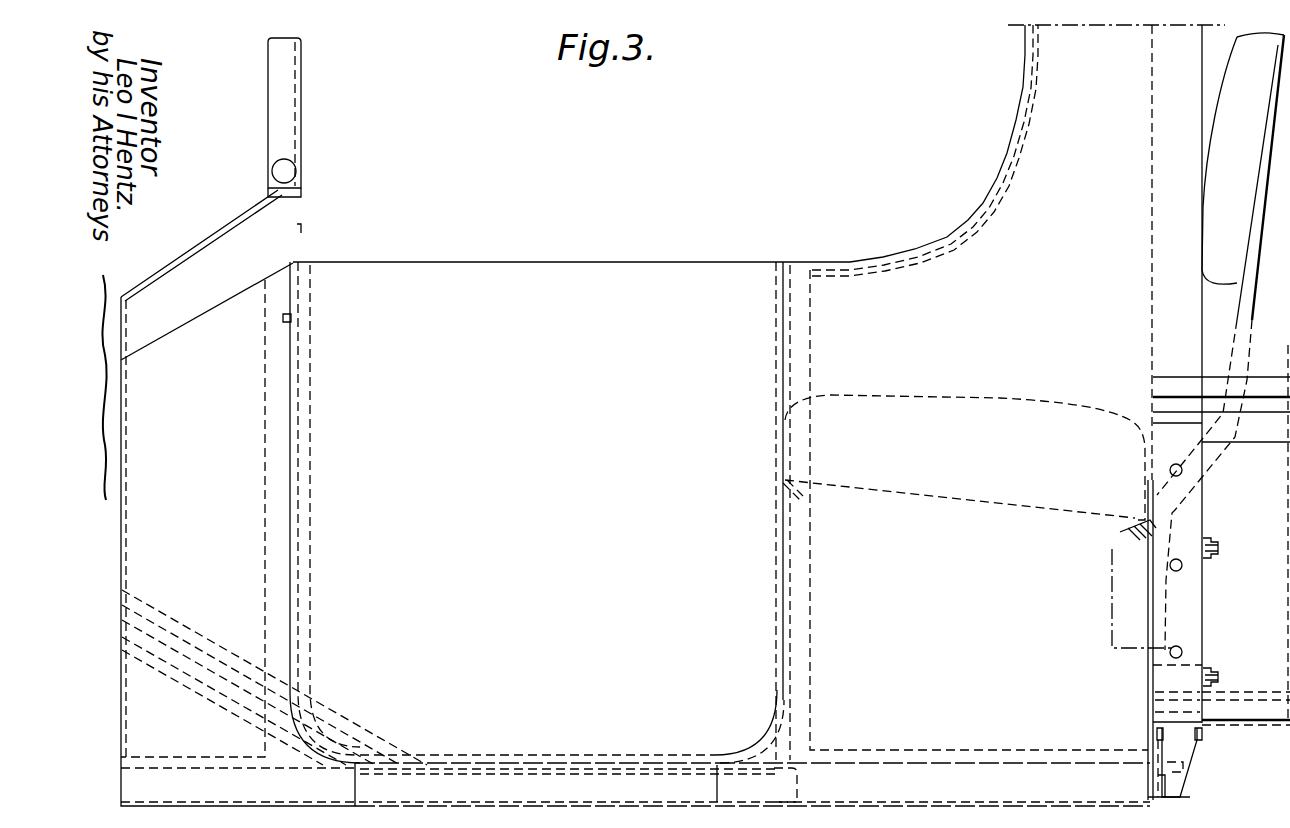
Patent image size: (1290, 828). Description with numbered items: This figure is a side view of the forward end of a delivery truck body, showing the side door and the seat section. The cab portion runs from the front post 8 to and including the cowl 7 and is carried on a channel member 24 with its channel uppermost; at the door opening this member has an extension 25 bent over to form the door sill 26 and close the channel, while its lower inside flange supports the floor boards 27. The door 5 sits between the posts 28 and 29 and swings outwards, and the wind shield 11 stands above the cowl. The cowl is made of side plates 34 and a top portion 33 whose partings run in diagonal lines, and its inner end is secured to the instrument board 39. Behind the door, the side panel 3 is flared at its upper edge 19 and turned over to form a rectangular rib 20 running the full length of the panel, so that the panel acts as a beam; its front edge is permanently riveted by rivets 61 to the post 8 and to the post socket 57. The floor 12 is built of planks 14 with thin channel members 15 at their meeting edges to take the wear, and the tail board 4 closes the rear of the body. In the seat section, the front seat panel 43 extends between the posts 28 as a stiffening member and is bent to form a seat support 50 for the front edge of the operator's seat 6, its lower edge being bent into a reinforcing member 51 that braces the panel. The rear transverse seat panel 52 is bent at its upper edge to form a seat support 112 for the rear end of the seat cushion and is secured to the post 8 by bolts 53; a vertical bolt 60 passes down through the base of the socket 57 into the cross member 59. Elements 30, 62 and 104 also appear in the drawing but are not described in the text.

The side panel 3 is at (1260, 490).
The tail board 4 is at (1248, 565).
The door 5 is at (558, 272).
The operator's seat 6 is at (1030, 412).
The cowl 7 is at (210, 247).
The front post 8 is at (1185, 46).
The wind shield 11 is at (361, 48).
The floor 12 is at (1237, 728).
The plank 14 is at (1233, 726).
The channel member 15 is at (1253, 697).
The flared upper edge 19 is at (1246, 429).
The rectangular rib 20 is at (1252, 380).
The channel member 24 is at (160, 772).
The extension 25 is at (612, 758).
The door sill 26 is at (468, 760).
The floor board 27 is at (396, 748).
The post 28 is at (812, 330).
The post 29 is at (266, 429).
The pillar flange 30 is at (312, 472).
The cowl top panel 33 is at (239, 252).
The side plate 34 is at (199, 388).
The instrument board 39 is at (305, 227).
The front seat panel 43 is at (777, 560).
The seat support 50 is at (800, 498).
The reinforcing member 51 is at (798, 780).
The rear transverse seat panel 52 is at (1152, 598).
The bolt 53 is at (1220, 545).
The post socket 57 is at (1196, 506).
The cross member 59 is at (1182, 758).
The vertical bolt 60 is at (1158, 776).
The rivet 61 is at (1169, 471).
The belt rail flange 62 is at (1165, 414).
The bottom fitting 104 is at (738, 783).
The seat support 112 is at (1128, 532).